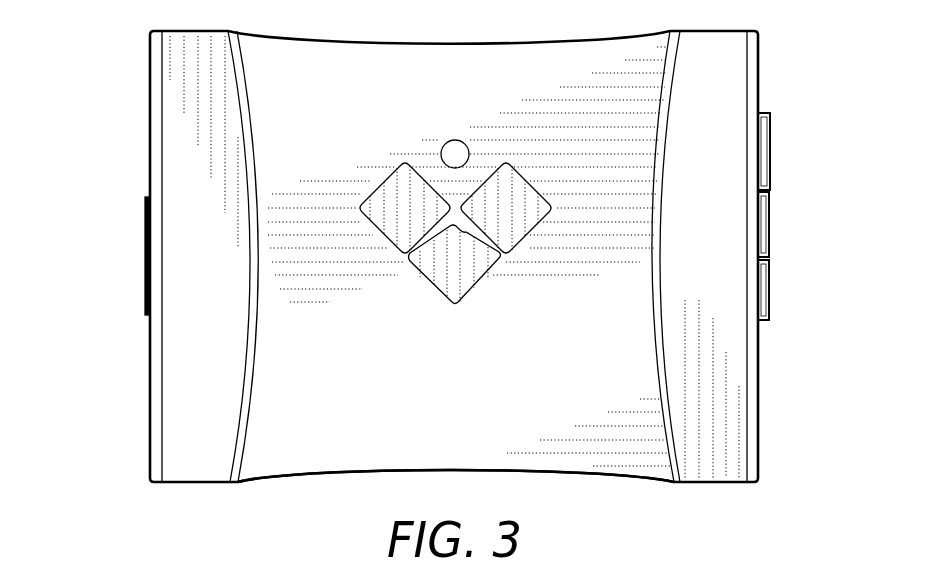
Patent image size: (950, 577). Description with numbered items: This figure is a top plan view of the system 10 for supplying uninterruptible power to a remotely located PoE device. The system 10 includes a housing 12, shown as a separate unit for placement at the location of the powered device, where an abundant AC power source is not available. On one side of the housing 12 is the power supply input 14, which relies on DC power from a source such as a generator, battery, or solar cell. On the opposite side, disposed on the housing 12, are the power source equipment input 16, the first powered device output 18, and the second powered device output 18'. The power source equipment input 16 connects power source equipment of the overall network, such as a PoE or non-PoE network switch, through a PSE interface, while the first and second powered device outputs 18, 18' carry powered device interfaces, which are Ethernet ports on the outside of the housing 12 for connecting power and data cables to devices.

The system for supplying uninterruptible power 10 is at (133, 64).
The housing 12 is at (605, 477).
The power supply input 14 is at (146, 277).
The power source equipment input 16 is at (766, 132).
The second powered device output 18' is at (813, 206).
The first powered device output 18 is at (811, 302).